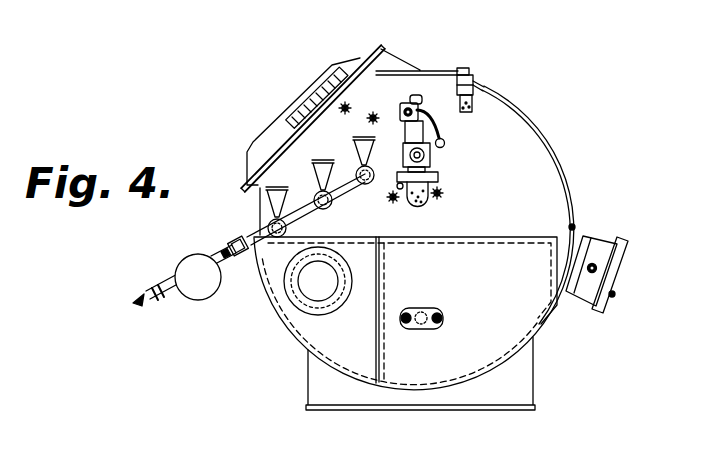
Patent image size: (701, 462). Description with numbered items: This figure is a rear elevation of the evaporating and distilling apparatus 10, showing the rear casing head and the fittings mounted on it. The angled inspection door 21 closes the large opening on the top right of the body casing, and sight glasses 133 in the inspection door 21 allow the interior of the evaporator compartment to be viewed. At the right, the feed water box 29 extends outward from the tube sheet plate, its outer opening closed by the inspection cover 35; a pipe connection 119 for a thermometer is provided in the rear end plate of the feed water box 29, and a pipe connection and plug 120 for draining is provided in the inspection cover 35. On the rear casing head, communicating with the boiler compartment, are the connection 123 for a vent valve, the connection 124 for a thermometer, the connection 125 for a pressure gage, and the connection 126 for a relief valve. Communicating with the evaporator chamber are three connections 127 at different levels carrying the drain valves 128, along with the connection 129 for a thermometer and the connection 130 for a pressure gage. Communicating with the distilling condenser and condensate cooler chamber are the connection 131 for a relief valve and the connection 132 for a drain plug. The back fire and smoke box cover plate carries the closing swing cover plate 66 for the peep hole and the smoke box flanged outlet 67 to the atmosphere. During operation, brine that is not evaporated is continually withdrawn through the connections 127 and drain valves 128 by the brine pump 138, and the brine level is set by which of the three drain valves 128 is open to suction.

The evaporating and distilling apparatus 10 is at (420, 445).
The inspection door 21 is at (358, 71).
The feed water box 29 is at (588, 291).
The inspection cover 35 is at (625, 262).
The closing swing cover plate 66 is at (427, 327).
The smoke box flanged outlet 67 is at (303, 302).
The pipe connection 119 is at (594, 264).
The pipe connection and plug 120 is at (615, 295).
The connection 123 is at (391, 196).
The connection 124 is at (440, 186).
The connection 125 is at (399, 208).
The connection 126 is at (441, 198).
The connections 127 is at (369, 170).
The drain valves 128 is at (278, 186).
The connection 129 is at (348, 107).
The connection 130 is at (375, 116).
The connection 131 is at (472, 106).
The connection 132 is at (574, 224).
The sight glasses 133 is at (325, 84).
The brine pump 138 is at (205, 300).